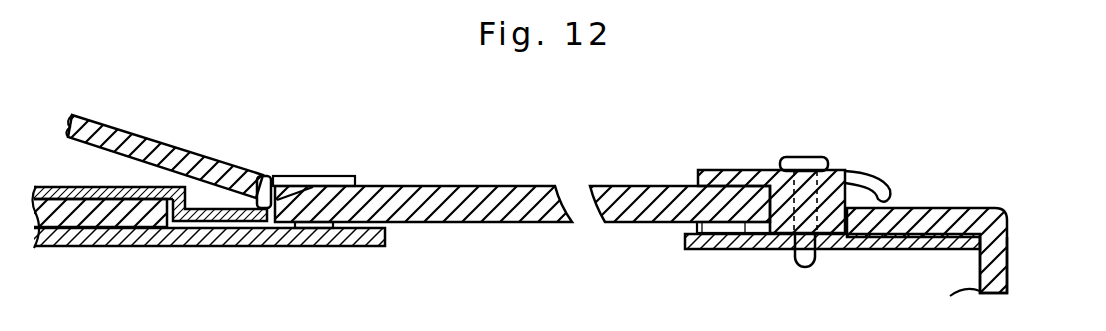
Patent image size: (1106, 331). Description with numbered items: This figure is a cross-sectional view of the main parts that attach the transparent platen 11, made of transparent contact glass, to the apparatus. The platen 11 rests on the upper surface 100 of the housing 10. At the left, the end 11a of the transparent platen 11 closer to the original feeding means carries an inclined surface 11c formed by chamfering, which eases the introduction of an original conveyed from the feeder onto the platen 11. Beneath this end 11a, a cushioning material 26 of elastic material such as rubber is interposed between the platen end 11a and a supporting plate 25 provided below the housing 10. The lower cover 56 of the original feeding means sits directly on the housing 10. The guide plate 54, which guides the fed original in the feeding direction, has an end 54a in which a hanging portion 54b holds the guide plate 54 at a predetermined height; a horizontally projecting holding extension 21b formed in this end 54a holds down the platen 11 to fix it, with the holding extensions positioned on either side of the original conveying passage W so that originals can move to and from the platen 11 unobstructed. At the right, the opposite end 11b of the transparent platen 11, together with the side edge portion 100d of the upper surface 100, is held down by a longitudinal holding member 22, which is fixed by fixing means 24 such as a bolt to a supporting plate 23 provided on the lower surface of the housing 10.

The housing 10 is at (86, 214).
The transparent platen 11 is at (522, 205).
The end of the transparent platen 11a is at (338, 205).
The end of the transparent platen 11b is at (727, 216).
The inclined surface 11c is at (292, 190).
The holding extension 21b is at (340, 176).
The holding member 22 is at (743, 172).
The supporting plate 23 is at (860, 250).
The fixing means 24 is at (806, 157).
The supporting plate 25 is at (176, 248).
The cushioning material 26 is at (318, 230).
The guide plate 54 is at (184, 124).
The end of the guide plate 54a is at (117, 127).
The hanging portion 54b is at (262, 198).
The lower cover 56 is at (60, 193).
The upper surface 100 is at (932, 208).
The side edge portion 100d is at (980, 208).
The original conveying passage W is at (234, 163).